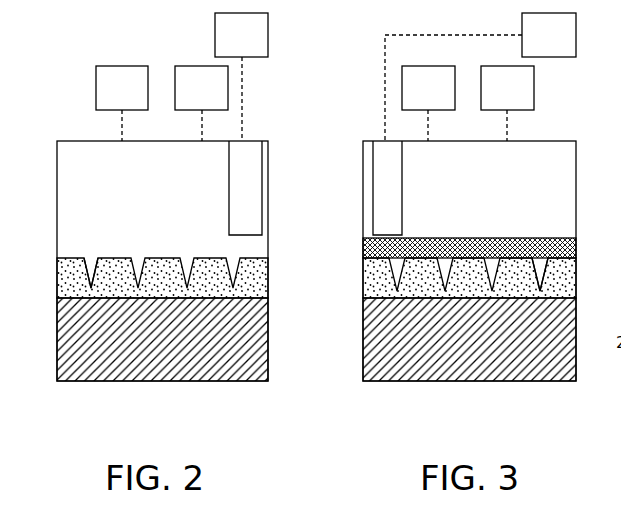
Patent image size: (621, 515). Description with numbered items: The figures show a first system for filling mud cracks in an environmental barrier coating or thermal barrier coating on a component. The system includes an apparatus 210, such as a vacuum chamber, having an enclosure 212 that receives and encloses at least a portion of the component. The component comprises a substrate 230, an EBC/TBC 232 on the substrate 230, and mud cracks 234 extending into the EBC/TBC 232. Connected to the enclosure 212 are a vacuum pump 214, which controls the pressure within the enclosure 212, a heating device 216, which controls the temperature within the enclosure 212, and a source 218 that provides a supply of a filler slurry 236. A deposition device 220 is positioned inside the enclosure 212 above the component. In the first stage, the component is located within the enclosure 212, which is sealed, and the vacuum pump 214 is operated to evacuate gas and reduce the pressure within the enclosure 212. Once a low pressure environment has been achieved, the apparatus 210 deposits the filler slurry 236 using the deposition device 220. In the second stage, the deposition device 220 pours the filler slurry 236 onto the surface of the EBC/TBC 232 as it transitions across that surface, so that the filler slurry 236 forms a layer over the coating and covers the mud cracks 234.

In FIG. 2, the apparatus 210 is at (57, 151).
In FIG. 3, the apparatus 210 is at (363, 151).
In FIG. 2, the enclosure 212 is at (181, 181).
In FIG. 3, the enclosure 212 is at (488, 181).
In FIG. 2, the vacuum pump 214 is at (138, 99).
In FIG. 3, the vacuum pump 214 is at (445, 99).
In FIG. 2, the heating device 216 is at (218, 99).
In FIG. 3, the heating device 216 is at (524, 99).
In FIG. 2, the source 218 is at (258, 46).
In FIG. 3, the source 218 is at (566, 46).
In FIG. 2, the deposition device 220 is at (263, 188).
In FIG. 3, the deposition device 220 is at (371, 190).
In FIG. 2, the substrate 230 is at (63, 340).
In FIG. 3, the substrate 230 is at (370, 337).
In FIG. 2, the EBC/TBC 232 is at (65, 284).
In FIG. 3, the EBC/TBC 232 is at (373, 282).
In FIG. 2, the mud cracks 234 is at (90, 268).
In FIG. 3, the mud cracks 234 is at (543, 270).
In FIG. 3, the filler slurry 236 is at (366, 247).